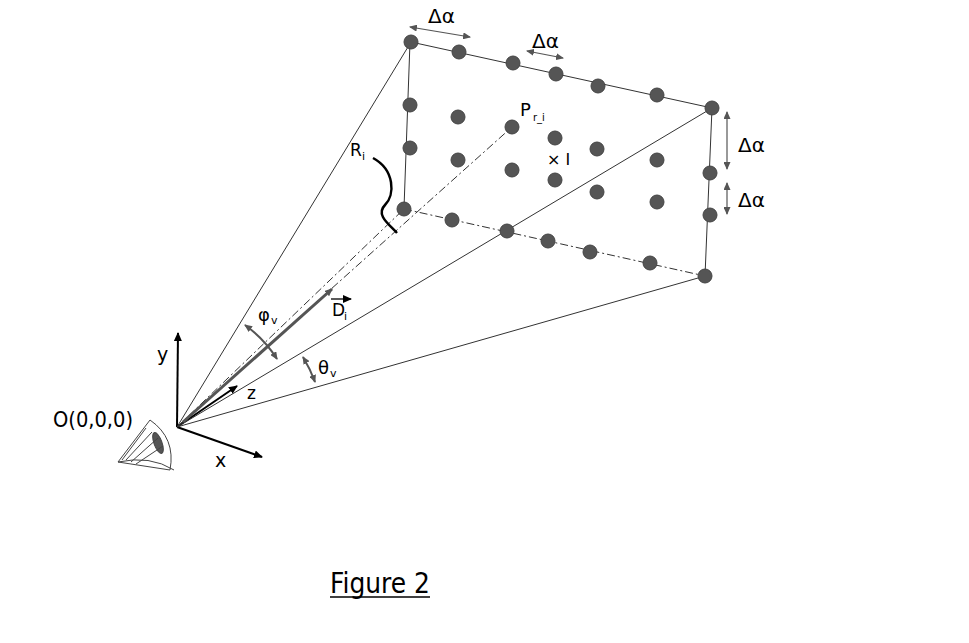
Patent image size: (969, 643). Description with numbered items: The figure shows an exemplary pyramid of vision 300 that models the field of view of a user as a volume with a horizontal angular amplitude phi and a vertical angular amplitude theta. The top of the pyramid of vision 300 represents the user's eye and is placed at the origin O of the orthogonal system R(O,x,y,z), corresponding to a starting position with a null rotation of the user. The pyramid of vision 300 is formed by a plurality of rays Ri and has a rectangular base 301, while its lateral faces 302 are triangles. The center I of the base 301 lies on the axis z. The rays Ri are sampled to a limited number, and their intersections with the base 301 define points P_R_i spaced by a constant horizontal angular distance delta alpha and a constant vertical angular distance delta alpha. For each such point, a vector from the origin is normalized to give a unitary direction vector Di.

The pyramid of vision 300 is at (433, 355).
The rectangular base 301 is at (713, 252).
The lateral faces 302 is at (347, 175).